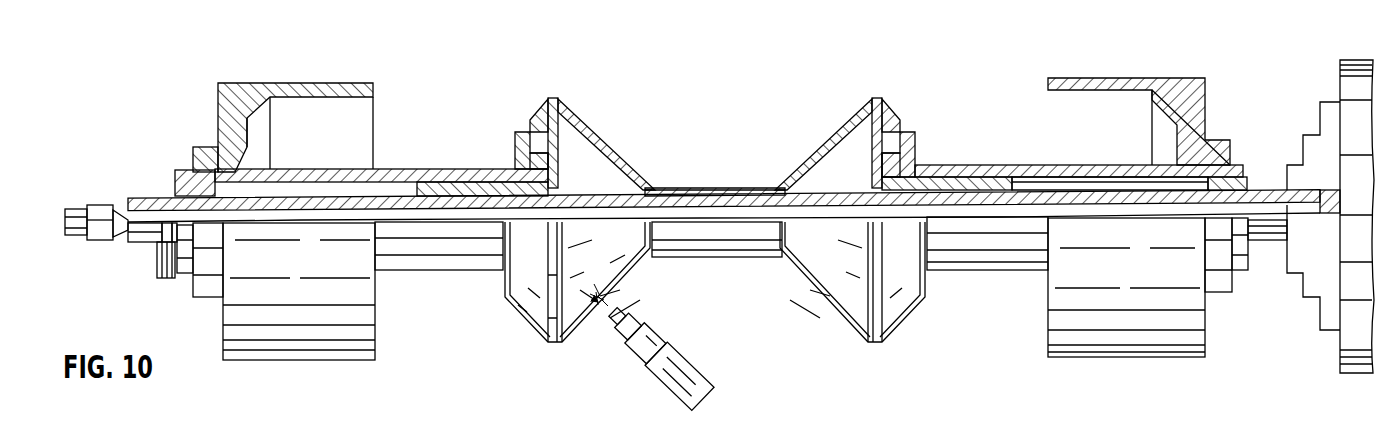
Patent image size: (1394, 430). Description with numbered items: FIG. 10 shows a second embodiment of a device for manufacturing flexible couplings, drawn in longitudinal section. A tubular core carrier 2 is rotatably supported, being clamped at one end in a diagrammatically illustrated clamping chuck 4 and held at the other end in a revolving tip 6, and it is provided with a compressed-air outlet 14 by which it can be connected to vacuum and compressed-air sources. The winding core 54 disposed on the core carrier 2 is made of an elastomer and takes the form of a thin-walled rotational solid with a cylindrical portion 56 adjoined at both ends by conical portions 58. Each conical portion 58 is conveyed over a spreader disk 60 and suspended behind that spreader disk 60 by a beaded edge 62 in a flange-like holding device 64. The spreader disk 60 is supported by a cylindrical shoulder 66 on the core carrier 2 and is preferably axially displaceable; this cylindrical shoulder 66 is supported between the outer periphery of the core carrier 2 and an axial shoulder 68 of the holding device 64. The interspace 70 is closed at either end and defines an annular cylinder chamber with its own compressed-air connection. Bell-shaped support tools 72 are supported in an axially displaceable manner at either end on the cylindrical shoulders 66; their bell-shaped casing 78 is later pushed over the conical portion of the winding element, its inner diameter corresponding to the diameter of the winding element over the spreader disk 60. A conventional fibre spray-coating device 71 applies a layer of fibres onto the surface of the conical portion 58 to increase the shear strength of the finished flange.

The core carrier 2 is at (1267, 197).
The clamping chuck 4 is at (1343, 343).
The revolving tip 6 is at (100, 208).
The compressed-air outlet 14 is at (157, 266).
The winding core 54 is at (663, 168).
The cylindrical portion 56 is at (707, 187).
The conical portion 58 is at (615, 147).
The spreader disk 60 is at (568, 125).
The beaded edge 62 is at (530, 120).
The holding device 64 is at (515, 142).
The cylindrical shoulder 66 is at (973, 180).
The axial shoulder 68 is at (1088, 170).
The interspace 70 is at (1123, 183).
The fibre spray-coating device 71 is at (676, 349).
The bell-shaped support tool 72 is at (206, 108).
The bell-shaped casing 78 is at (1070, 82).